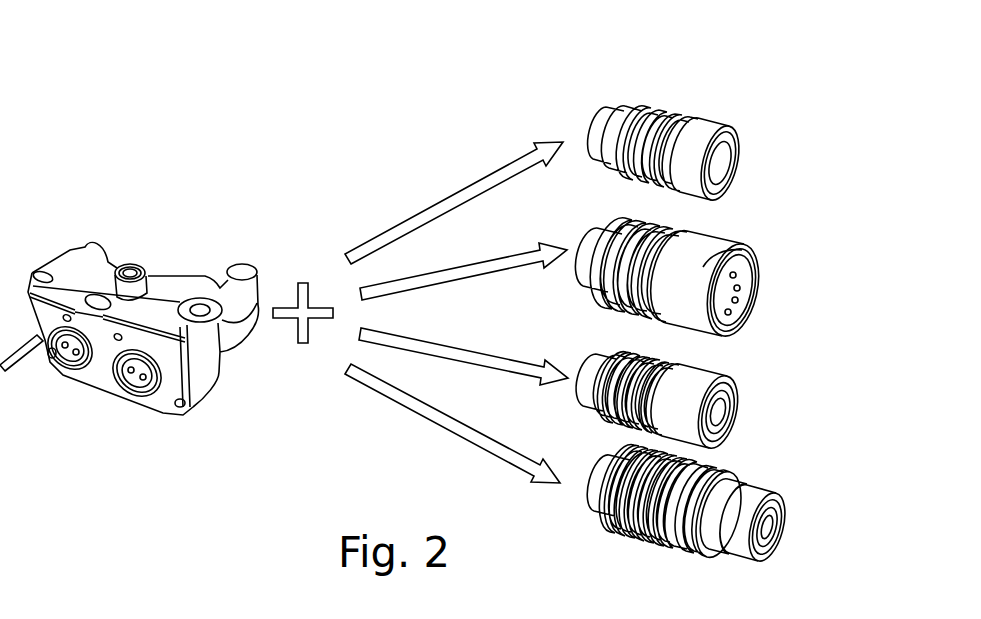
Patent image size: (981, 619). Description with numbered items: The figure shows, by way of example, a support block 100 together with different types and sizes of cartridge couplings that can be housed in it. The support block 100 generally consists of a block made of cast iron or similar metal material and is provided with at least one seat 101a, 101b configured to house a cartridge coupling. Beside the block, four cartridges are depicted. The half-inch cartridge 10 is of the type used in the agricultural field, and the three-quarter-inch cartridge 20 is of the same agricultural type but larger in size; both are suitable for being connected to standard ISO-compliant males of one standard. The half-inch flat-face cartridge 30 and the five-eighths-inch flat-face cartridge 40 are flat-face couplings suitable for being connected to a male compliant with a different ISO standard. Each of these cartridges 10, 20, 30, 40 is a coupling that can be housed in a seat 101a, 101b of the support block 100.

The support block 100 is at (129, 324).
The seat 101a is at (62, 363).
The seat 101b is at (130, 397).
The half-inch cartridge 10 is at (731, 93).
The three-quarter-inch cartridge 20 is at (748, 226).
The half-inch flat-face cartridge 30 is at (747, 381).
The five-eighths-inch flat-face cartridge 40 is at (767, 470).